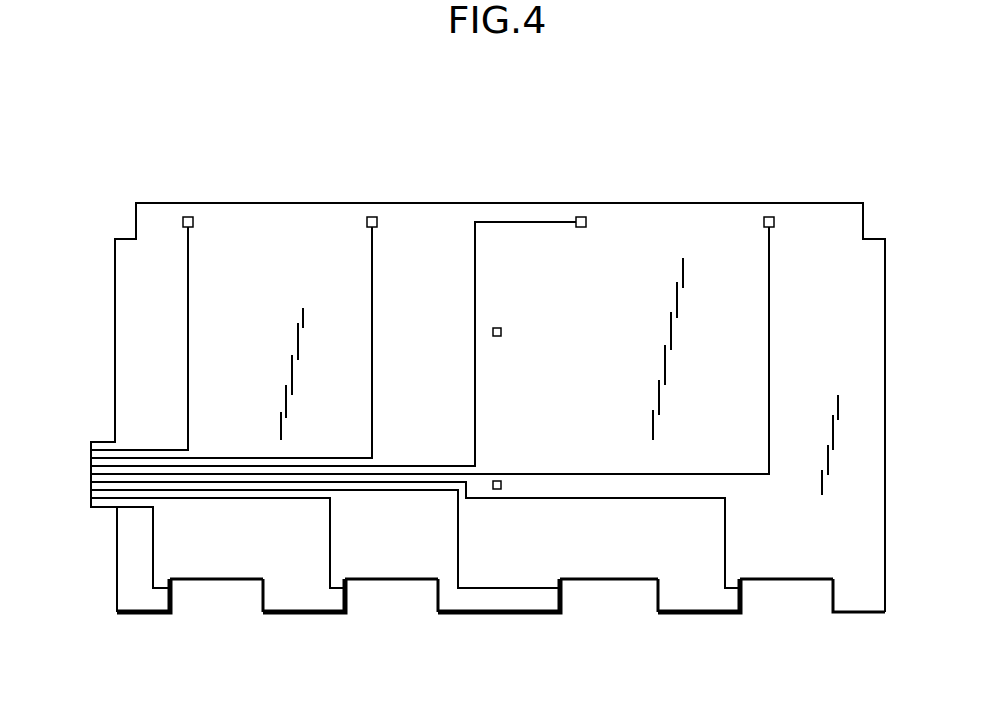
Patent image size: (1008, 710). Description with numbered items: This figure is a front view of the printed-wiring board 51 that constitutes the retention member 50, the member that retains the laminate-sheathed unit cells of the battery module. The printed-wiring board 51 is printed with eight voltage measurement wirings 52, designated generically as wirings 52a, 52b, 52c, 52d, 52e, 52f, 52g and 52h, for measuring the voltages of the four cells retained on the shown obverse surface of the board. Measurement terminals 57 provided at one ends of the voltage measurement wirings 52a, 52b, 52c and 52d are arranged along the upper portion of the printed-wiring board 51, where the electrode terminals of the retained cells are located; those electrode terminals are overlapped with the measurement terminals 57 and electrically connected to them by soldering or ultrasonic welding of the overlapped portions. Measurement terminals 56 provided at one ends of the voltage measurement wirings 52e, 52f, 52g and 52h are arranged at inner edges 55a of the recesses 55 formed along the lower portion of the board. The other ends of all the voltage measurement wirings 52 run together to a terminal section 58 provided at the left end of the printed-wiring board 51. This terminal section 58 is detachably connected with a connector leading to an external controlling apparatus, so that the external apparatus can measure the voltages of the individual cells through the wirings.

The retention member 50 is at (716, 121).
The printed-wiring board 51 is at (674, 212).
The voltage measurement wirings 52 is at (82, 442).
The voltage measurement wiring 52a is at (190, 284).
The voltage measurement wiring 52b is at (374, 284).
The voltage measurement wiring 52c is at (478, 284).
The voltage measurement wiring 52d is at (771, 284).
The voltage measurement wiring 52e is at (155, 535).
The voltage measurement wiring 52f is at (332, 535).
The voltage measurement wiring 52g is at (460, 535).
The voltage measurement wiring 52h is at (727, 535).
The recess 55 is at (245, 579).
The inner edge 55a is at (262, 614).
The measurement terminal 56 is at (160, 614).
The measurement terminal 57 is at (190, 214).
The terminal section 58 is at (102, 512).